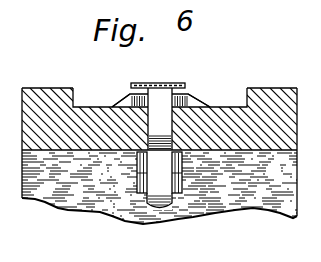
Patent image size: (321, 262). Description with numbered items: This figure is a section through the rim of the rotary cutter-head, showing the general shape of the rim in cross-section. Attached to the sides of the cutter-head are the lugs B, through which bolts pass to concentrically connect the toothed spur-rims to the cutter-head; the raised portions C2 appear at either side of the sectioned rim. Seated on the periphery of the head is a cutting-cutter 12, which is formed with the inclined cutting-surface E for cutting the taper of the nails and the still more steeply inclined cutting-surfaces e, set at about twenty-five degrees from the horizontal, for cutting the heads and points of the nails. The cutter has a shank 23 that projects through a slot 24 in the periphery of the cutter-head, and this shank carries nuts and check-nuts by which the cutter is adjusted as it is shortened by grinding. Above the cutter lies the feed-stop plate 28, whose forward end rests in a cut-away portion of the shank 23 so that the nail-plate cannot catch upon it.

The lug B is at (160, 156).
The raised shoulder of block C2 is at (163, 74).
The cutting-cutter 12 is at (133, 108).
The slot 24 is at (175, 109).
The cutting-surface e is at (132, 93).
The feed-stop plate 28 is at (151, 83).
The inclined cutting-surface E is at (161, 91).
The shank 23 is at (159, 151).